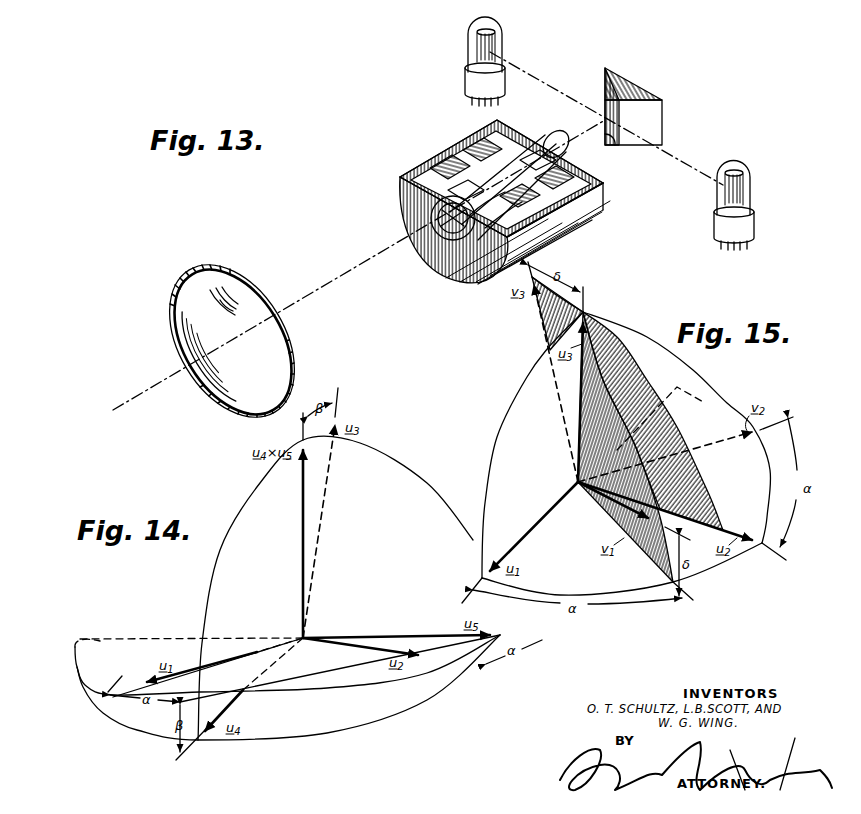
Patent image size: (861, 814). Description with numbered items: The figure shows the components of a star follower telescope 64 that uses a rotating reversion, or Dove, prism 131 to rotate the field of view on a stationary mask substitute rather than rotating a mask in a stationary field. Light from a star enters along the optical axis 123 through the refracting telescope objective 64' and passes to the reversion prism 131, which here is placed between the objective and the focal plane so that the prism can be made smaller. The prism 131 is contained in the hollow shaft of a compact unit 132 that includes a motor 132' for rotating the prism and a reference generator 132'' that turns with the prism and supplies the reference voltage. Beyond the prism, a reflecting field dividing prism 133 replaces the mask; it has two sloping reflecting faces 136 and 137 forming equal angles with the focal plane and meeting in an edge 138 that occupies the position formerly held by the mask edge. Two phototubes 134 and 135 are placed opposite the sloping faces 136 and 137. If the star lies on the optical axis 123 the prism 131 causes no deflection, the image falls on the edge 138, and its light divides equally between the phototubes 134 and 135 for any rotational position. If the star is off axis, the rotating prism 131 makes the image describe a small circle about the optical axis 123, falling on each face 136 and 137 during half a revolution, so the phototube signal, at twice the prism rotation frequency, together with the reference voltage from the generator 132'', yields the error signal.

The telescope 64 is at (439, 178).
The telescope objective 64' is at (243, 341).
The optical axis 123 is at (148, 389).
The reversion prism 131 is at (437, 248).
The reference generator unit 132 is at (520, 201).
The motor 132' is at (549, 232).
The reference generator 132'' is at (553, 233).
The field dividing prism 133 is at (630, 90).
The phototube 134 is at (752, 179).
The phototube 135 is at (502, 36).
The sloping reflecting face 136 is at (656, 120).
The sloping reflecting face 137 is at (604, 94).
The edge 138 is at (614, 141).